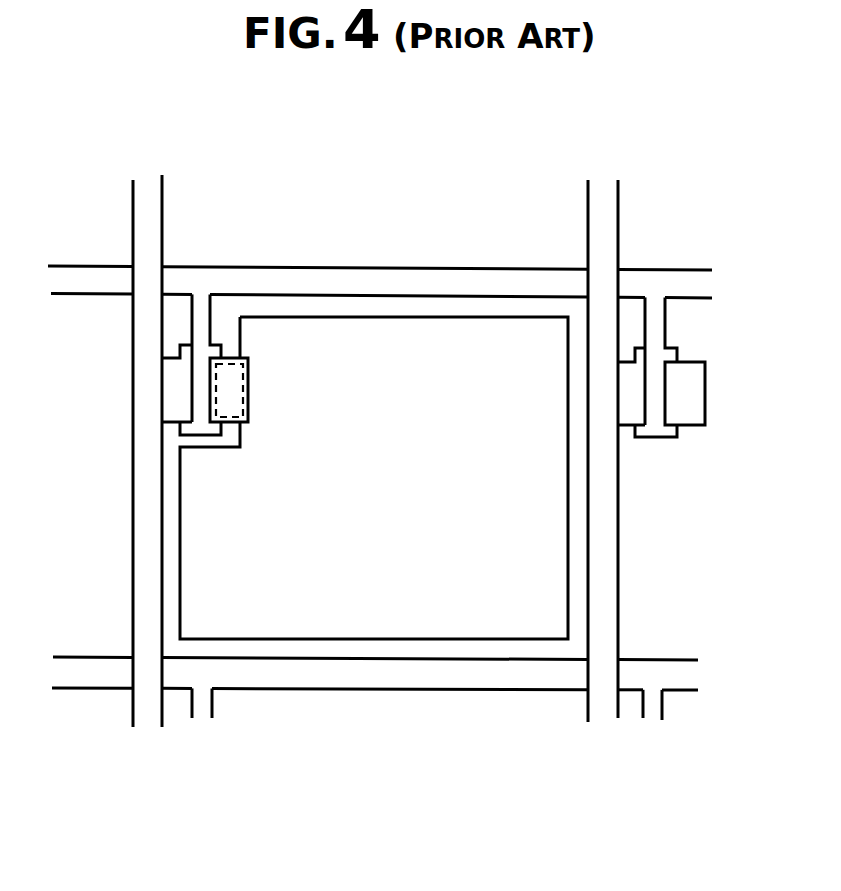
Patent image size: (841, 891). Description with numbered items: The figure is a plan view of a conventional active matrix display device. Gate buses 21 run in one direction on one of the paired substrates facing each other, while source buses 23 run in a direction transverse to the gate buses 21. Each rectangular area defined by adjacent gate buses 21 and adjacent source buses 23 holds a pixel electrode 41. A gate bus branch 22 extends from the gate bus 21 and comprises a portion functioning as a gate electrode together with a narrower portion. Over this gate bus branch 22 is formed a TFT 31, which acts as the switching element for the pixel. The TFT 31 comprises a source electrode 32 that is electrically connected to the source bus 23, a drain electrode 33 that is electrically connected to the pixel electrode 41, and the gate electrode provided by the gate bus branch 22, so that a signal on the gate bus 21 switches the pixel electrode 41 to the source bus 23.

The gate bus 21 is at (412, 284).
The gate bus branch 22 is at (205, 319).
The source bus 23 is at (141, 208).
The TFT 31 is at (188, 390).
The source electrode 32 is at (175, 373).
The drain electrode 33 is at (228, 389).
The pixel electrode 41 is at (398, 503).